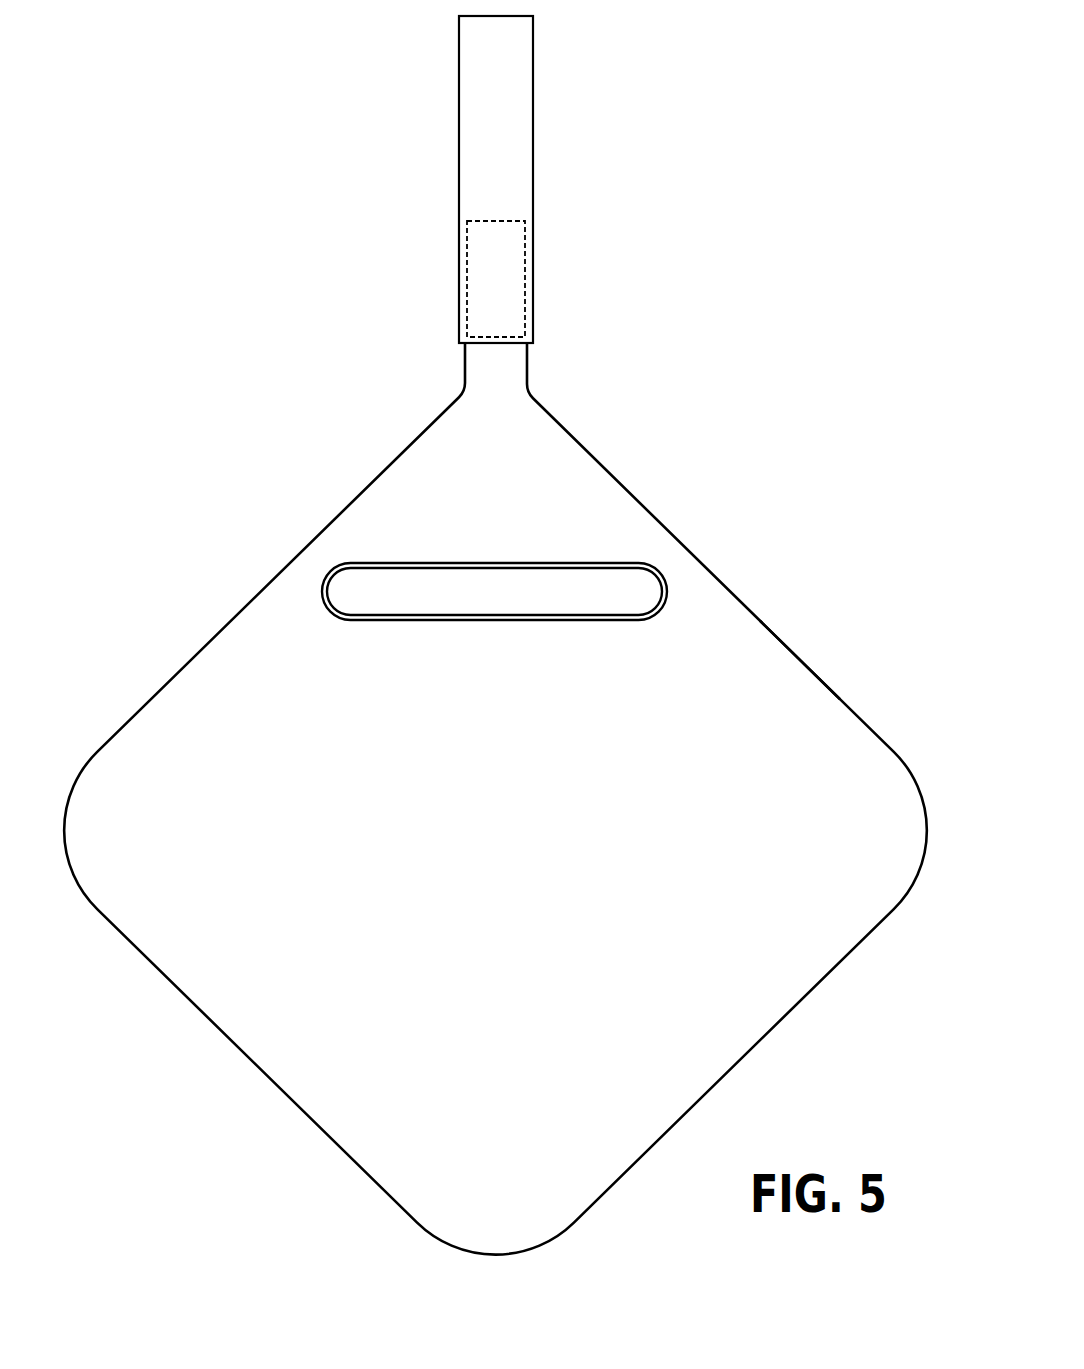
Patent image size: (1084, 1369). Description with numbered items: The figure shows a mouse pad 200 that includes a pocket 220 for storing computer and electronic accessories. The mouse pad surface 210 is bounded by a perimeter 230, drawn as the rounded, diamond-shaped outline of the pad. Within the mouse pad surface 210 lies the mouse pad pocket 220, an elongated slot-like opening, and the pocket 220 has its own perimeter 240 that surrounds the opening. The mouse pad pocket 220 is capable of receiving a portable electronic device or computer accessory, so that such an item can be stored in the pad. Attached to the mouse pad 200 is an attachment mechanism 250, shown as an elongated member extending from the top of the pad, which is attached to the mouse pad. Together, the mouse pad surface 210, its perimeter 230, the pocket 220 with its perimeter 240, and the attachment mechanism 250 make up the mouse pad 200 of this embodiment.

The mouse pad 200 is at (495, 635).
The mouse pad surface 210 is at (524, 788).
The pocket 220 is at (628, 585).
The perimeter 230 is at (797, 650).
The perimeter 240 is at (325, 604).
The attachment mechanism 250 is at (513, 155).